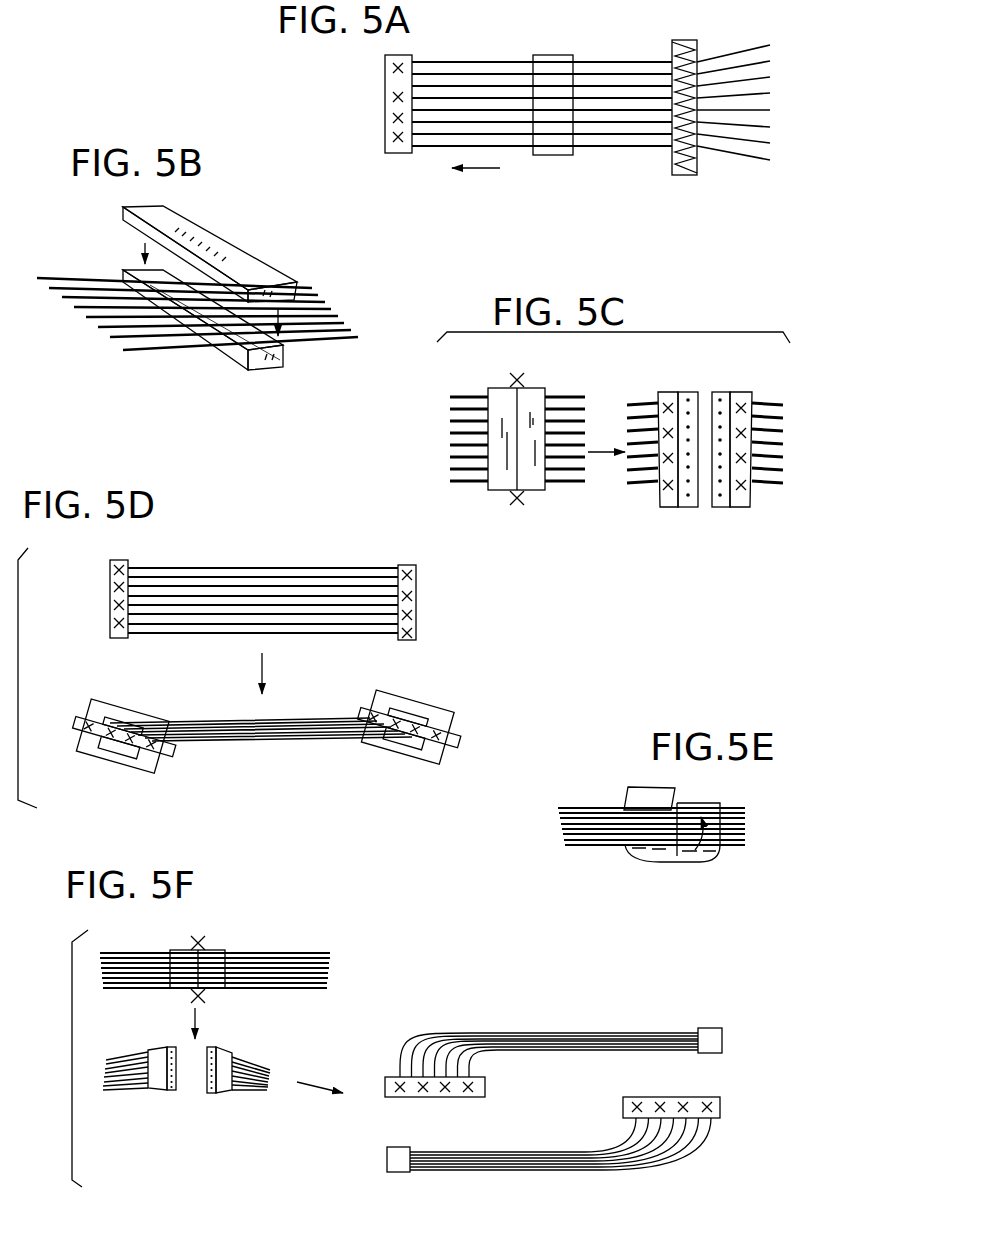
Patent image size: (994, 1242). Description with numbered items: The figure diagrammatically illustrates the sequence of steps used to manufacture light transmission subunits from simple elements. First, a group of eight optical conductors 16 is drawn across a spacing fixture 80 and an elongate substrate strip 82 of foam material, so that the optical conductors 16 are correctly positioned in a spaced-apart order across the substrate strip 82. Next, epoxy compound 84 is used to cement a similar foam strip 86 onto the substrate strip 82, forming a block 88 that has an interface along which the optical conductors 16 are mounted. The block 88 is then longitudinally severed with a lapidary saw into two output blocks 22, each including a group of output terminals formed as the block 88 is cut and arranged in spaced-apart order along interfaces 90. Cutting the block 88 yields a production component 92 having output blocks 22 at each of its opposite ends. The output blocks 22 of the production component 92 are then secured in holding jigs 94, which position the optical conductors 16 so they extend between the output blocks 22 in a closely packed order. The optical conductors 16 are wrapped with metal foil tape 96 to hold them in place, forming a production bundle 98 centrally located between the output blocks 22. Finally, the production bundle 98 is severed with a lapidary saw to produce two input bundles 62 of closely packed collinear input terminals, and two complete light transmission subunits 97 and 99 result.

In FIG. 5A, the optical conductors 16 is at (631, 153).
In FIG. 5B, the optical conductors 16 is at (146, 358).
In FIG. 5C, the optical conductors 16 is at (462, 390).
In FIG. 5D, the optical conductors 16 is at (228, 565).
In FIG. 5E, the optical conductors 16 is at (598, 849).
In FIG. 5F, the optical conductors 16 is at (147, 947).
In FIG. 5C, the output blocks 22 is at (667, 505).
In FIG. 5D, the output blocks 22 is at (125, 562).
In FIG. 5F, the input bundles 62 is at (160, 1083).
In FIG. 5A, the spacing fixture 80 is at (697, 162).
In FIG. 5A, the substrate strip 82 is at (554, 156).
In FIG. 5B, the substrate strip 82 is at (287, 357).
In FIG. 5B, the epoxy compound 84 is at (267, 349).
In FIG. 5B, the foam strip 86 is at (123, 216).
In FIG. 5B, the block 88 is at (341, 309).
In FIG. 5C, the block 88 is at (534, 488).
In FIG. 5C, the interfaces 90 is at (687, 509).
In FIG. 5D, the production component 92 is at (108, 603).
In FIG. 5D, the holding jigs 94 is at (85, 755).
In FIG. 5E, the metal foil tape 96 is at (684, 855).
In FIG. 5F, the light transmission subunit 97 is at (589, 1032).
In FIG. 5F, the production bundle 98 is at (215, 952).
In FIG. 5F, the light transmission subunit 99 is at (527, 1150).